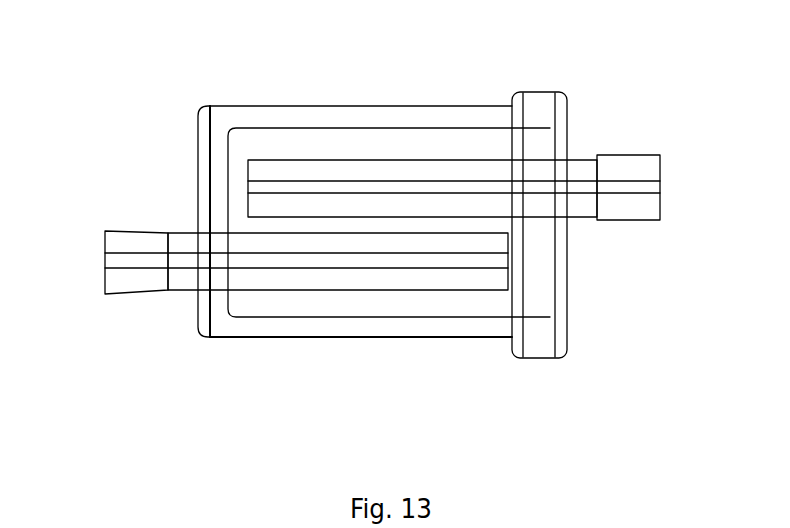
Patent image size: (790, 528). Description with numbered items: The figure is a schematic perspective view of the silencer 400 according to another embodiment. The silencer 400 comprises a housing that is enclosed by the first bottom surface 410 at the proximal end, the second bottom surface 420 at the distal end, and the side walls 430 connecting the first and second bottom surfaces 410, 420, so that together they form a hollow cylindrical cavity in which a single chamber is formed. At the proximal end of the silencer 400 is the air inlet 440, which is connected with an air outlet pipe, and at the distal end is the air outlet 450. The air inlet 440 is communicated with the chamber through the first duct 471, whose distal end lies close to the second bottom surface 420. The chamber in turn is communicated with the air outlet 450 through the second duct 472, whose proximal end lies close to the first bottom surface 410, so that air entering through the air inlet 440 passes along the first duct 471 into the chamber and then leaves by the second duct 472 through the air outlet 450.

The silencer 400 is at (750, 52).
The first bottom surface 410 is at (200, 180).
The second bottom surface 420 is at (563, 265).
The side walls 430 is at (383, 112).
The air inlet 440 is at (105, 233).
The air outlet 450 is at (665, 147).
The first duct 471 is at (268, 280).
The second duct 472 is at (467, 163).